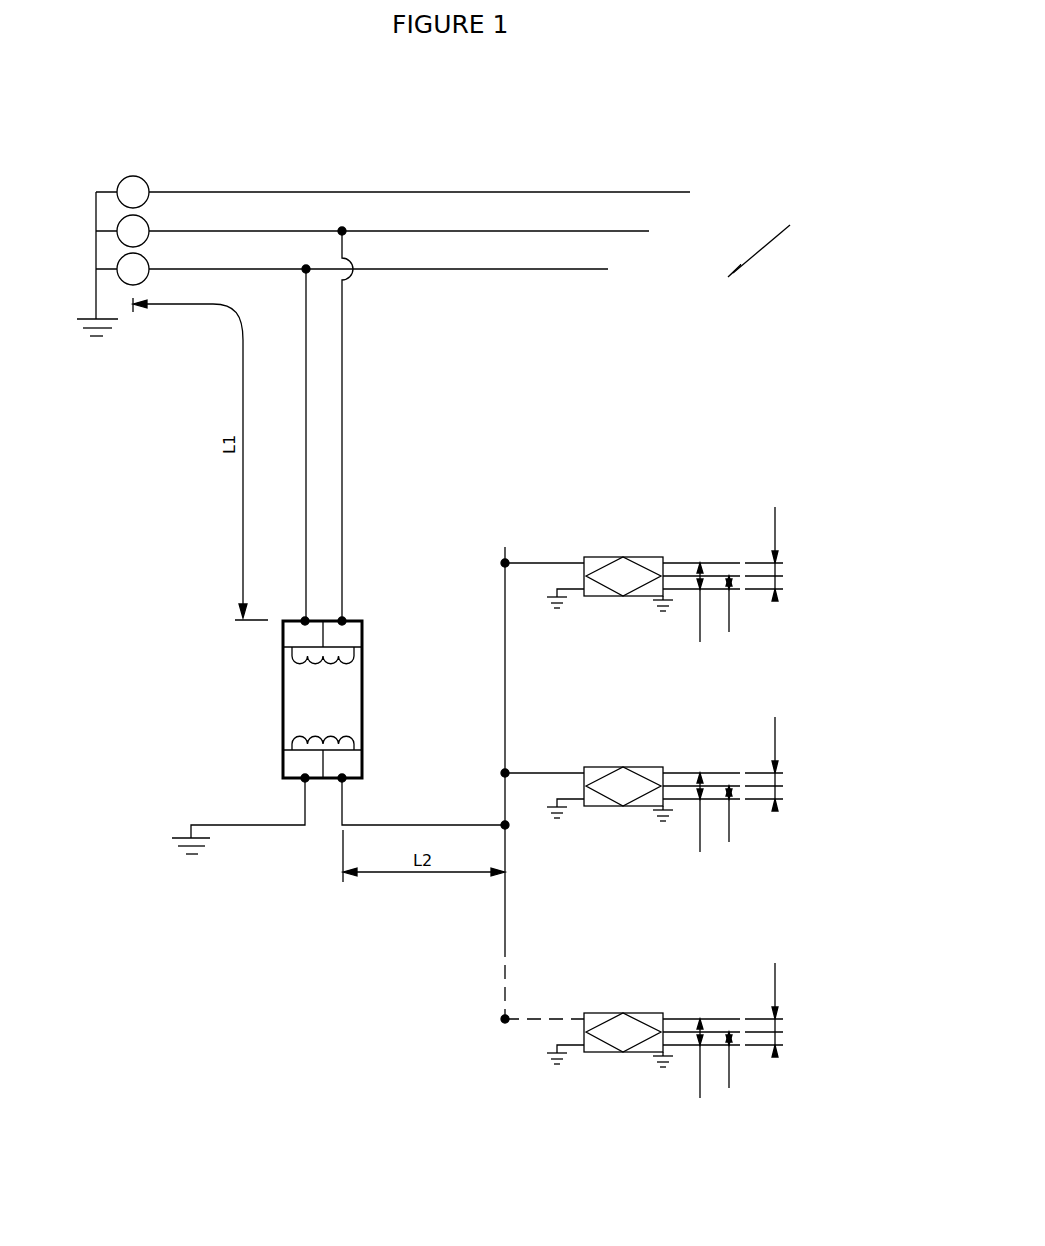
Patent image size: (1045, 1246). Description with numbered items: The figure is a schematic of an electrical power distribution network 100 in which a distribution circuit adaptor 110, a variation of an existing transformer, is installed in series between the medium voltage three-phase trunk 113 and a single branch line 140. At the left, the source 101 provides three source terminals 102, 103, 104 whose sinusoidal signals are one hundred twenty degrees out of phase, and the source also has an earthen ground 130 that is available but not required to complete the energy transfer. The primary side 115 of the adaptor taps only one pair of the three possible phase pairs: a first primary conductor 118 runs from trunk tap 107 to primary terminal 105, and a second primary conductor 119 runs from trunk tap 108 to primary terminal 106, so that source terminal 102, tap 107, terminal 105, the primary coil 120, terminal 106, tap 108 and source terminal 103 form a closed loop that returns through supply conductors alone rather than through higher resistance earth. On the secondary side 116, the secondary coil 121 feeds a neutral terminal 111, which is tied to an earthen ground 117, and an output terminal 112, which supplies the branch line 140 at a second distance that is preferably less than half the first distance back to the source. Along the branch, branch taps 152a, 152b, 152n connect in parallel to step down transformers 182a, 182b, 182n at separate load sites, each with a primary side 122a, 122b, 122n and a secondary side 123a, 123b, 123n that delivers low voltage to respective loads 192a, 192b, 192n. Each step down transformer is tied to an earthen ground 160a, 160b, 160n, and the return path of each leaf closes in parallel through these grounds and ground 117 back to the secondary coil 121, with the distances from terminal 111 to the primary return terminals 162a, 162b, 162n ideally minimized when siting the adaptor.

The electrical power distribution network 100 is at (780, 232).
The source 101 is at (82, 183).
The source terminal 102 is at (155, 262).
The source terminal 103 is at (157, 222).
The source terminal 104 is at (157, 183).
The primary terminal 105 is at (310, 610).
The primary terminal 106 is at (348, 612).
The trunk tap 107 is at (317, 278).
The trunk tap 108 is at (348, 237).
The distribution circuit adaptor 110 is at (240, 678).
The neutral terminal 111 is at (297, 783).
The output terminal 112 is at (337, 785).
The trunk 113 is at (582, 153).
The primary side 115 is at (370, 623).
The secondary side 116 is at (370, 748).
The earthen ground 117 is at (203, 858).
The first primary conductor 118 is at (303, 420).
The second primary conductor 119 is at (343, 428).
The primary coil 120 is at (287, 648).
The secondary coil 121 is at (287, 742).
The primary side 122a is at (654, 497).
The primary side 122b is at (647, 737).
The primary side 122n is at (626, 984).
The secondary side 123a is at (663, 553).
The secondary side 123b is at (667, 767).
The secondary side 123n is at (667, 1013).
The earthen ground 130 is at (95, 347).
The branch line 140 is at (497, 912).
The branch tap 152a is at (508, 547).
The branch tap 152b is at (510, 763).
The branch tap 152n is at (505, 1025).
The earthen ground 160a is at (555, 610).
The earthen ground 160b is at (562, 820).
The earthen ground 160n is at (557, 1067).
The primary return terminal 162a is at (582, 595).
The primary return terminal 162b is at (580, 805).
The primary return terminal 162n is at (585, 1053).
The step down transformer 182a is at (618, 553).
The step down transformer 182b is at (587, 763).
The step down transformer 182n is at (623, 1013).
The loads 192a is at (795, 550).
The loads 192b is at (798, 772).
The loads 192n is at (797, 1020).